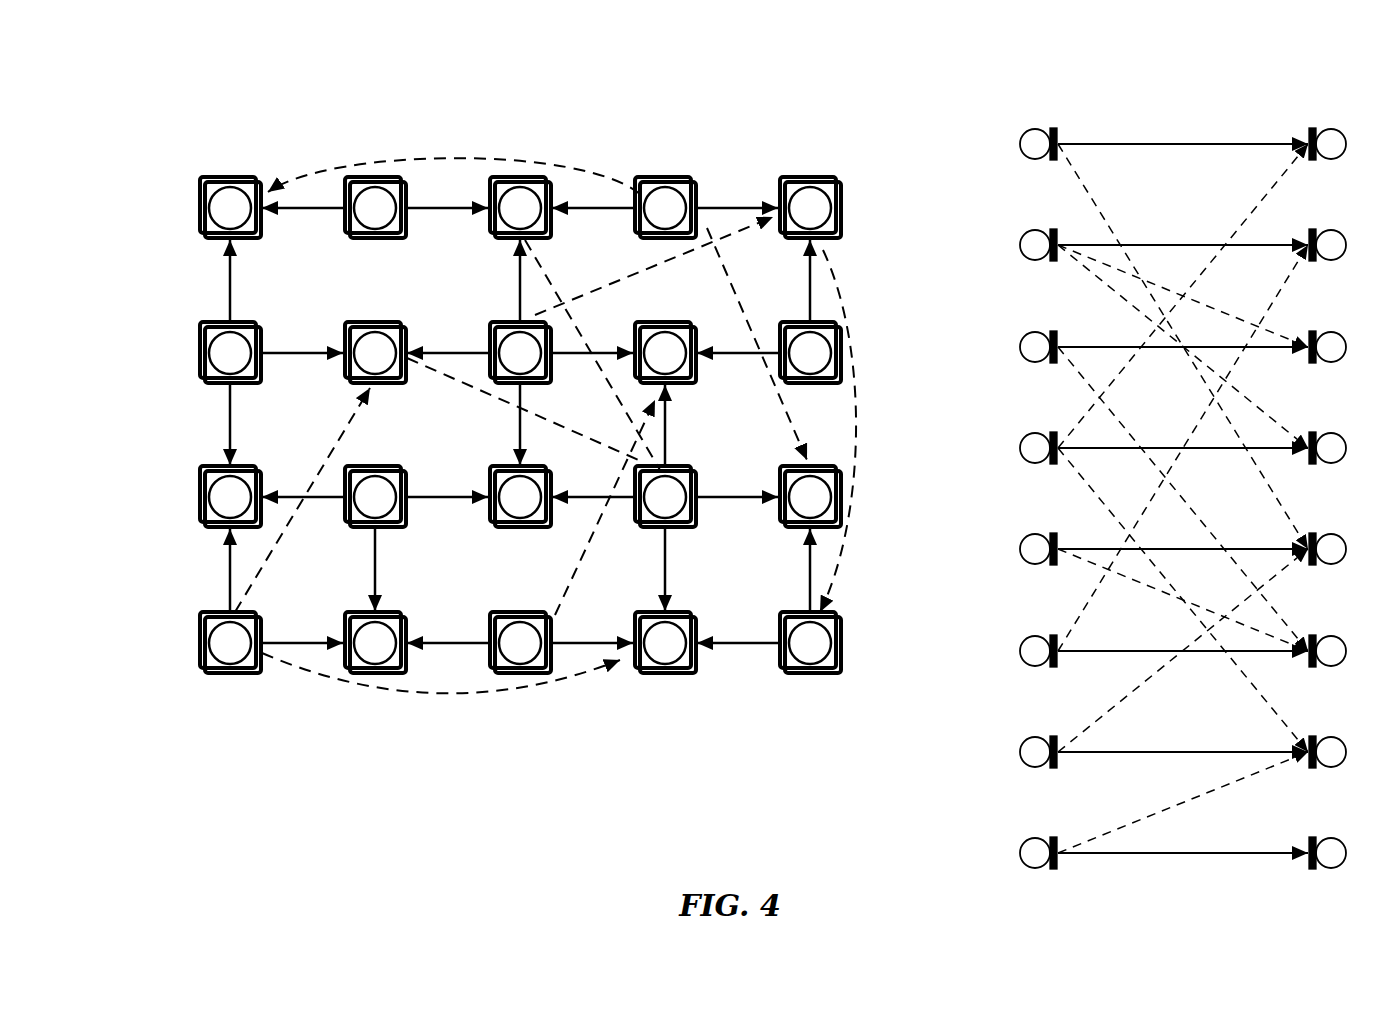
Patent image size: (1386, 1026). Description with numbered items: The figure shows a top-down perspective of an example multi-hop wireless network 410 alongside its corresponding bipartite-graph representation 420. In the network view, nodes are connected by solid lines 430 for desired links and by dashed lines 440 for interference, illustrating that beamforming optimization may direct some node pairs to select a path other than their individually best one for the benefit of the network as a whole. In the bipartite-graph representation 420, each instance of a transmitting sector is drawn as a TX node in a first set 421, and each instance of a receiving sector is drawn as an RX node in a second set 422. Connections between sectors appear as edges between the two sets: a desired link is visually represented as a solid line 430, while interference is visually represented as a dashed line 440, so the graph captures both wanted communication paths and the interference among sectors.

The mesh network topology 410 is at (524, 60).
The bipartite-graph representation 420 is at (1160, 44).
The first set 421 is at (1011, 119).
The second set 422 is at (1311, 119).
The solid line 430 is at (228, 296).
The dashed line 440 is at (340, 167).